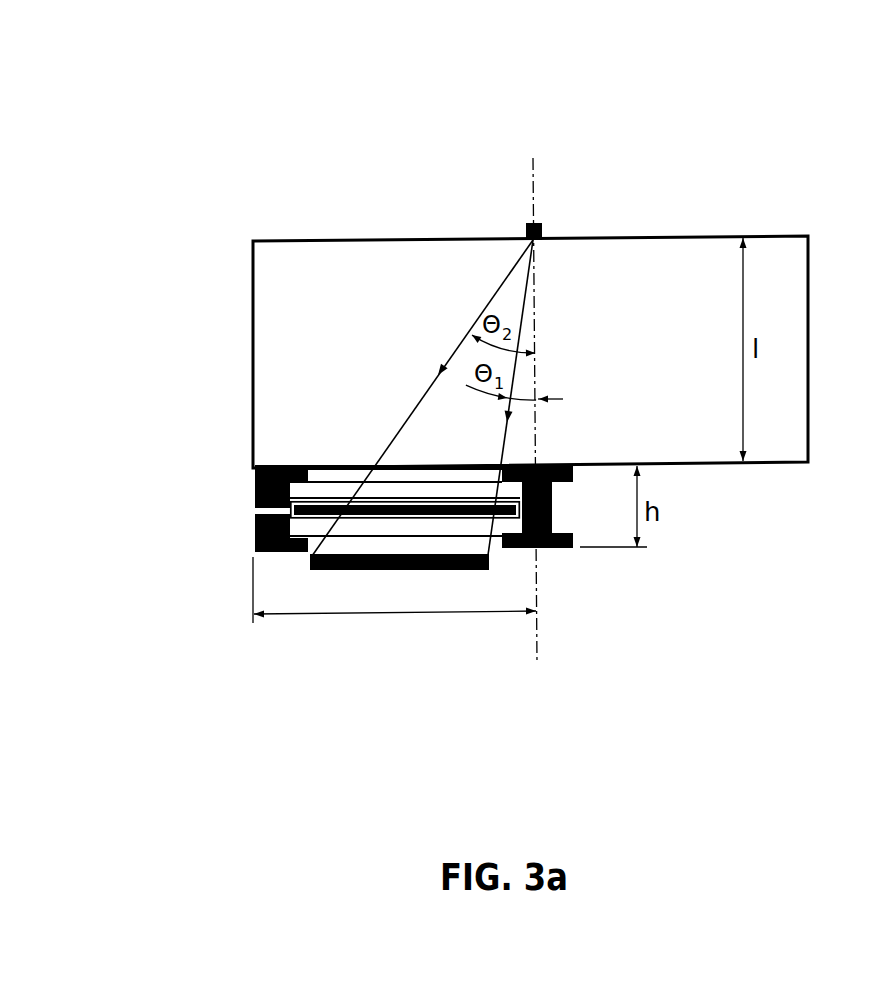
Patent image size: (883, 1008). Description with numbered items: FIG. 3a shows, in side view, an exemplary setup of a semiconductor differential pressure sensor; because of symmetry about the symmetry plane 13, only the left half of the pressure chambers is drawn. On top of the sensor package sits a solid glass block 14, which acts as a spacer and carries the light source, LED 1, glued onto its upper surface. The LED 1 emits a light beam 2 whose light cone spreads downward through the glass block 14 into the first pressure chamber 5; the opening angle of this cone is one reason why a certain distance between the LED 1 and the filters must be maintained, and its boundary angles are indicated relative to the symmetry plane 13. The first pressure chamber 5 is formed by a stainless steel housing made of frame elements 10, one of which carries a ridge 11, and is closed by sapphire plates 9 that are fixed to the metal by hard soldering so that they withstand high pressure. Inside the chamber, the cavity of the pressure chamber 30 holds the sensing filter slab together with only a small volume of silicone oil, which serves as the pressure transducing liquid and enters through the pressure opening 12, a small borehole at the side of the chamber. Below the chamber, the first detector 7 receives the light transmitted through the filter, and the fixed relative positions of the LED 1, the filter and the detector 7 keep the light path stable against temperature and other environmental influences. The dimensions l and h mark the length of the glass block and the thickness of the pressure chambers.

The light source, LED 1 is at (505, 139).
The light beam 2 is at (422, 297).
The first pressure chamber 5 is at (316, 460).
The first detector 7 is at (346, 563).
The sapphire plates 9 is at (307, 512).
The frame elements 10 is at (359, 614).
The ridge of frame element 11 is at (513, 542).
The pressure opening filled with silicone oil 12 is at (252, 511).
The symmetry plane 13 is at (564, 350).
The glass block 14 is at (674, 290).
The cavity of the pressure chamber 30 is at (429, 509).